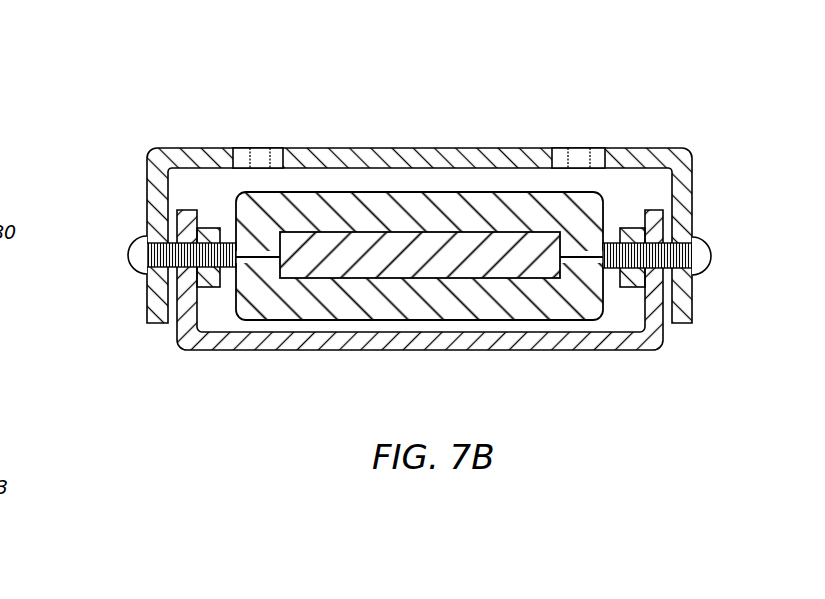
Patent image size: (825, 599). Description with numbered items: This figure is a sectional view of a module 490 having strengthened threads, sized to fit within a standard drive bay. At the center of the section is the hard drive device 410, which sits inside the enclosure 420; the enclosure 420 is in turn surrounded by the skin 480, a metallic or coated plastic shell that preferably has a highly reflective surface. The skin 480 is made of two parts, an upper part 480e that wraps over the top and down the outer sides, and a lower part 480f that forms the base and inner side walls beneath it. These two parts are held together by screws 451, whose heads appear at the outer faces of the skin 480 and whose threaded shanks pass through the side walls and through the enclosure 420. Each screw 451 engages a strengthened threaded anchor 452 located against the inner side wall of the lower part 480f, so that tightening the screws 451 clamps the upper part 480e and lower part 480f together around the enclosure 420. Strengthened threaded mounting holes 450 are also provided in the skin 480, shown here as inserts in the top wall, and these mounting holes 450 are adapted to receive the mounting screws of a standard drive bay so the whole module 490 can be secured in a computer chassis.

The fastening assembly 490 is at (415, 207).
The skin 480 is at (391, 234).
The upper part of skin 480e is at (217, 148).
The lower part of skin 480f is at (190, 350).
The strengthened threaded mounting holes 450 is at (277, 148).
The strengthened threaded anchors 452 is at (208, 228).
The screws 451 is at (137, 275).
The enclosure 420 is at (365, 212).
The hard drive device 410 is at (395, 278).